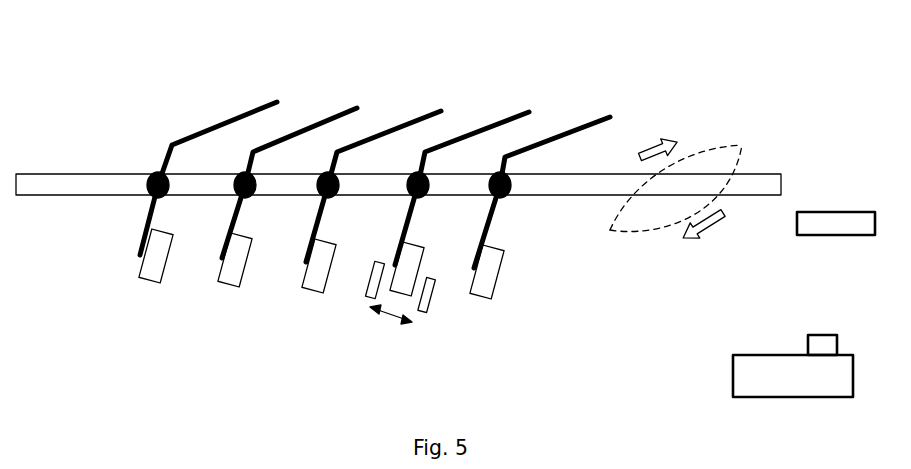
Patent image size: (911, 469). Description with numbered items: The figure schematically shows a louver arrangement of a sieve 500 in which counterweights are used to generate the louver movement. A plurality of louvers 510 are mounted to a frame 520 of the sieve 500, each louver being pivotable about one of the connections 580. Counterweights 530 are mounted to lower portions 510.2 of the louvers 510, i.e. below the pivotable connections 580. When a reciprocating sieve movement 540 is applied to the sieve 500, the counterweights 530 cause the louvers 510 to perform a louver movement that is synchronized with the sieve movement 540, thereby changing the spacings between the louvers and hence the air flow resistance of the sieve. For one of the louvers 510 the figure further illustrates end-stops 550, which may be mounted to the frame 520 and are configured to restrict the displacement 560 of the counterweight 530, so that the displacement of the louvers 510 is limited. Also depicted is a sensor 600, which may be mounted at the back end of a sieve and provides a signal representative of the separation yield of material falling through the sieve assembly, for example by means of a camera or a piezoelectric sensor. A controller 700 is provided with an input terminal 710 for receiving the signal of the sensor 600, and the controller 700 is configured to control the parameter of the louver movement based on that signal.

The sieve 500 is at (100, 65).
The louvers 510 is at (337, 113).
The lower portions of the louvers 510.2 is at (157, 223).
The frame 520 is at (45, 195).
The counterweights 530 is at (230, 276).
The sieve movement 540 is at (643, 233).
The end-stops 550 is at (375, 282).
The displacement of the counterweight 560 is at (390, 315).
The pivotable connections 580 is at (157, 173).
The sensor 600 is at (847, 223).
The controller 700 is at (762, 382).
The input terminal 710 is at (822, 342).